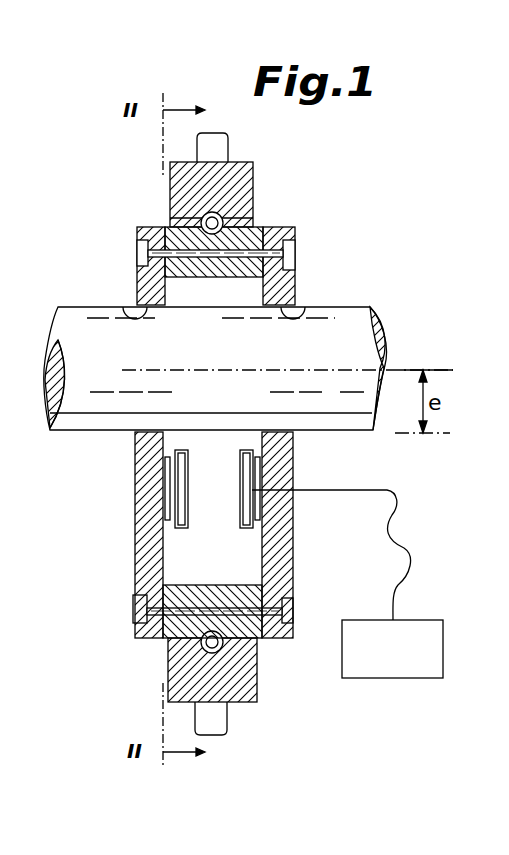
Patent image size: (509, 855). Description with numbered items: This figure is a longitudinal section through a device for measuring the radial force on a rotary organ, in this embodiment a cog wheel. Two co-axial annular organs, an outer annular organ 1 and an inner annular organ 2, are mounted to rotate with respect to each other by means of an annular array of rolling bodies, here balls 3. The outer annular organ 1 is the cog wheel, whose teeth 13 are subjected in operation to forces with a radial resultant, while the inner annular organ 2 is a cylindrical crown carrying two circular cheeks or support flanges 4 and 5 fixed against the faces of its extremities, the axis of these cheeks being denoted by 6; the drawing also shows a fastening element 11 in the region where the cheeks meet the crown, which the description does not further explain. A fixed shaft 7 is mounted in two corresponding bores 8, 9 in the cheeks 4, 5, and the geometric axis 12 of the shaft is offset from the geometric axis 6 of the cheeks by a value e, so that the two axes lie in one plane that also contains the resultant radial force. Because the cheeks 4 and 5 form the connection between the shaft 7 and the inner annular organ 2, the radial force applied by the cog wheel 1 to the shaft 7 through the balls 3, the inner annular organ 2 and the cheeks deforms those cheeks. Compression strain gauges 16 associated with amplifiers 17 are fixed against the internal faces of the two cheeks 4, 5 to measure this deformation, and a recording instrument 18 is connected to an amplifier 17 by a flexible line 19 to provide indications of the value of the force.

The outer annular organ 1 is at (247, 178).
The inner annular organ 2 is at (258, 240).
The balls 3 is at (203, 217).
The cheek or support flange 4 is at (148, 568).
The cheek or support flange 5 is at (285, 568).
The axis of the cheeks 6 is at (433, 434).
The fixed shaft 7 is at (72, 320).
The bore 8 is at (122, 318).
The bore 9 is at (302, 318).
The bolt 11 is at (137, 250).
The geometric axis of the shaft 12 is at (437, 369).
The teeth 13 is at (222, 146).
The compression strain gauges 16 is at (165, 470).
The amplifiers 17 is at (178, 520).
The recording instrument 18 is at (444, 663).
The flexible line 19 is at (410, 549).